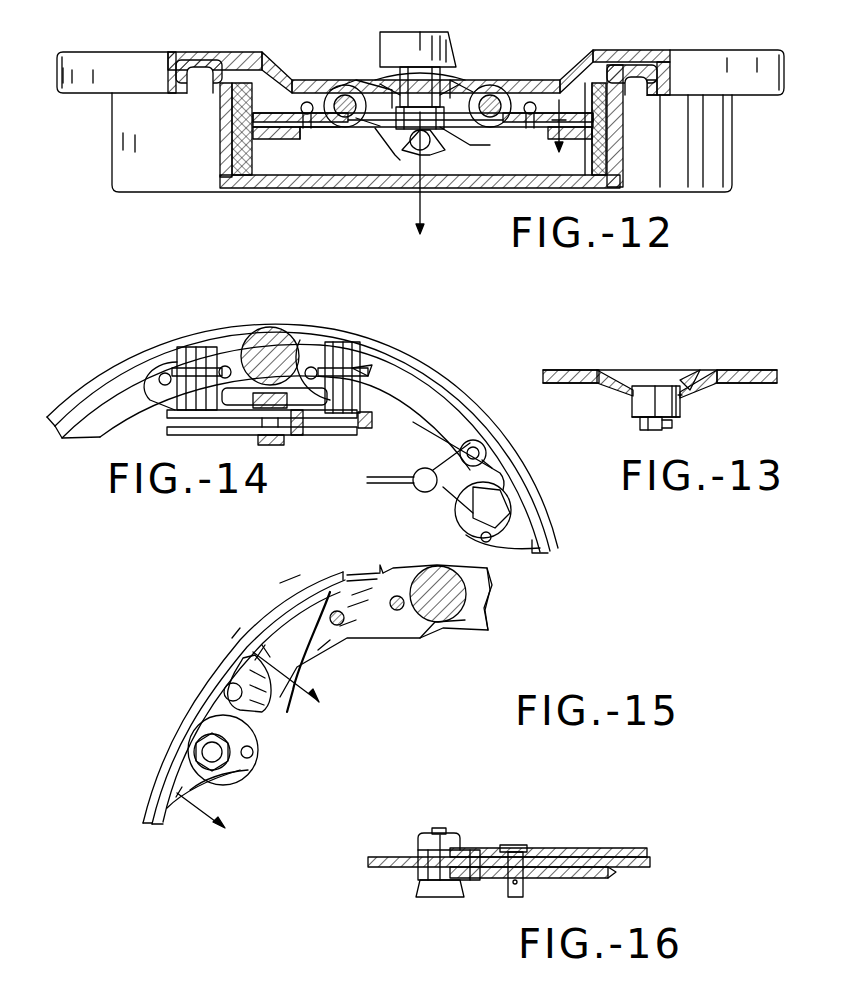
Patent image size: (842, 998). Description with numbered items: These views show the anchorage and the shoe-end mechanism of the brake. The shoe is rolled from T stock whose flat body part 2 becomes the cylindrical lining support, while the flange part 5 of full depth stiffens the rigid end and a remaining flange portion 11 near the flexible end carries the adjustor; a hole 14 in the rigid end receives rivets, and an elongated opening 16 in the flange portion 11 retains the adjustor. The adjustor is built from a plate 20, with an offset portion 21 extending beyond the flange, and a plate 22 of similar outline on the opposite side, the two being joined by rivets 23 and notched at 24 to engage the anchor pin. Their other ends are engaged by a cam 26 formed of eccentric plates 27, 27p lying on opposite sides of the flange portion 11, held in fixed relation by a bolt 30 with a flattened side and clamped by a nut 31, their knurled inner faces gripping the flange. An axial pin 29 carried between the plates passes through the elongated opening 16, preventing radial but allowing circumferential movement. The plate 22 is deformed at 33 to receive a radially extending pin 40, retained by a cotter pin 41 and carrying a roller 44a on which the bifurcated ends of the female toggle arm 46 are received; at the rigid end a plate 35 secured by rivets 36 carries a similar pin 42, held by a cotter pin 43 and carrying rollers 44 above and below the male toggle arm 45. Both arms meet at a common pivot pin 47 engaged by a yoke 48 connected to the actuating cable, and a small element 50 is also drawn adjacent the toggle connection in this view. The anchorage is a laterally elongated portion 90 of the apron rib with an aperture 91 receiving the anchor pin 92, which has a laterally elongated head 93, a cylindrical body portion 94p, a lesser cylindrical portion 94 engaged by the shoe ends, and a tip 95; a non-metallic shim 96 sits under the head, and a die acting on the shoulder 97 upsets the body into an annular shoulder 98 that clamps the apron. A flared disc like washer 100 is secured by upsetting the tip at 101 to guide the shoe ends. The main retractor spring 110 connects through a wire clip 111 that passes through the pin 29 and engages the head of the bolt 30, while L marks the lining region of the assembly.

In FIG. 14, the body part 2 is at (58, 428).
In FIG. 15, the body part 2 is at (246, 708).
In FIG. 12, the flange part of full depth 5 is at (522, 133).
In FIG. 14, the flange part of full depth 5 is at (86, 437).
In FIG. 15, the flange part of full depth 5 is at (492, 603).
In FIG. 14, the flange portion 11 is at (550, 552).
In FIG. 15, the flange portion 11 is at (285, 700).
In FIG. 16, the flange portion 11 is at (555, 855).
In FIG. 12, the hole 14 is at (491, 173).
In FIG. 15, the elongated opening 16 is at (240, 660).
In FIG. 12, the plate 20 is at (280, 140).
In FIG. 15, the plate 20 is at (275, 722).
In FIG. 16, the plate 20 is at (600, 877).
In FIG. 12, the offset portion 21 is at (300, 137).
In FIG. 16, the offset portion 21 is at (616, 875).
In FIG. 12, the plate 22 is at (275, 106).
In FIG. 14, the plate 22 is at (447, 447).
In FIG. 15, the plate 22 is at (400, 638).
In FIG. 16, the plate 22 is at (608, 848).
In FIG. 12, the rivets 23 is at (310, 102).
In FIG. 14, the notch 24 is at (300, 338).
In FIG. 15, the notch 24 is at (425, 573).
In FIG. 15, the cam 26 is at (188, 748).
In FIG. 15, the eccentric plate 27 is at (250, 770).
In FIG. 16, the eccentric plate 27 is at (418, 858).
In FIG. 14, the eccentric plate 27p is at (511, 515).
In FIG. 16, the eccentric plate 27p is at (418, 885).
In FIG. 14, the axial pin 29 is at (477, 442).
In FIG. 16, the axial pin 29 is at (523, 885).
In FIG. 15, the bolt 30 is at (205, 757).
In FIG. 16, the bolt 30 is at (445, 832).
In FIG. 15, the nut 31 is at (232, 772).
In FIG. 16, the nut 31 is at (462, 843).
In FIG. 12, the deformation 33 is at (345, 80).
In FIG. 14, the deformation 33 is at (362, 390).
In FIG. 12, the plate 35 is at (545, 133).
In FIG. 14, the plate 35 is at (248, 340).
In FIG. 14, the rivets 36 is at (225, 365).
In FIG. 12, the pin 40 is at (345, 128).
In FIG. 14, the pin 40 is at (343, 372).
In FIG. 12, the cotter pin 41 is at (355, 125).
In FIG. 14, the cotter pin 41 is at (372, 372).
In FIG. 12, the pin 42 is at (505, 103).
In FIG. 14, the pin 42 is at (196, 347).
In FIG. 14, the cotter pin 43 is at (170, 352).
In FIG. 14, the rollers 44 is at (167, 418).
In FIG. 14, the roller 44a is at (366, 428).
In FIG. 12, the male toggle arm 45 is at (450, 135).
In FIG. 14, the male toggle arm 45 is at (233, 423).
In FIG. 12, the female toggle arm 46 is at (398, 150).
In FIG. 14, the female toggle arm 46 is at (290, 418).
In FIG. 14, the pivot pin 47 is at (270, 445).
In FIG. 14, the yoke 48 is at (280, 445).
In FIG. 14, the pin 50 is at (300, 435).
In FIG. 12, the laterally elongated portion 90 is at (455, 90).
In FIG. 13, the laterally elongated portion 90 is at (712, 380).
In FIG. 13, the aperture 91 is at (682, 400).
In FIG. 12, the anchor pin 92 is at (430, 93).
In FIG. 13, the anchor pin 92 is at (660, 385).
In FIG. 13, the laterally elongated head 93 is at (695, 378).
In FIG. 12, the lesser cylindrical portion 94 is at (430, 125).
In FIG. 13, the lesser cylindrical portion 94 is at (632, 418).
In FIG. 13, the cylindrical body portion 94p is at (632, 392).
In FIG. 13, the tip 95 is at (648, 430).
In FIG. 13, the non-metallic shim 96 is at (640, 375).
In FIG. 13, the shoulder 97 is at (673, 425).
In FIG. 12, the annular shoulder 98 is at (450, 60).
In FIG. 12, the flared disc like washer 100 is at (390, 160).
In FIG. 12, the upset tip 101 is at (425, 125).
In FIG. 14, the main retractor spring 110 is at (370, 485).
In FIG. 14, the wire clip 111 is at (416, 489).
In FIG. 14, the lid ring L is at (80, 386).
In FIG. 15, the lid ring L is at (263, 694).